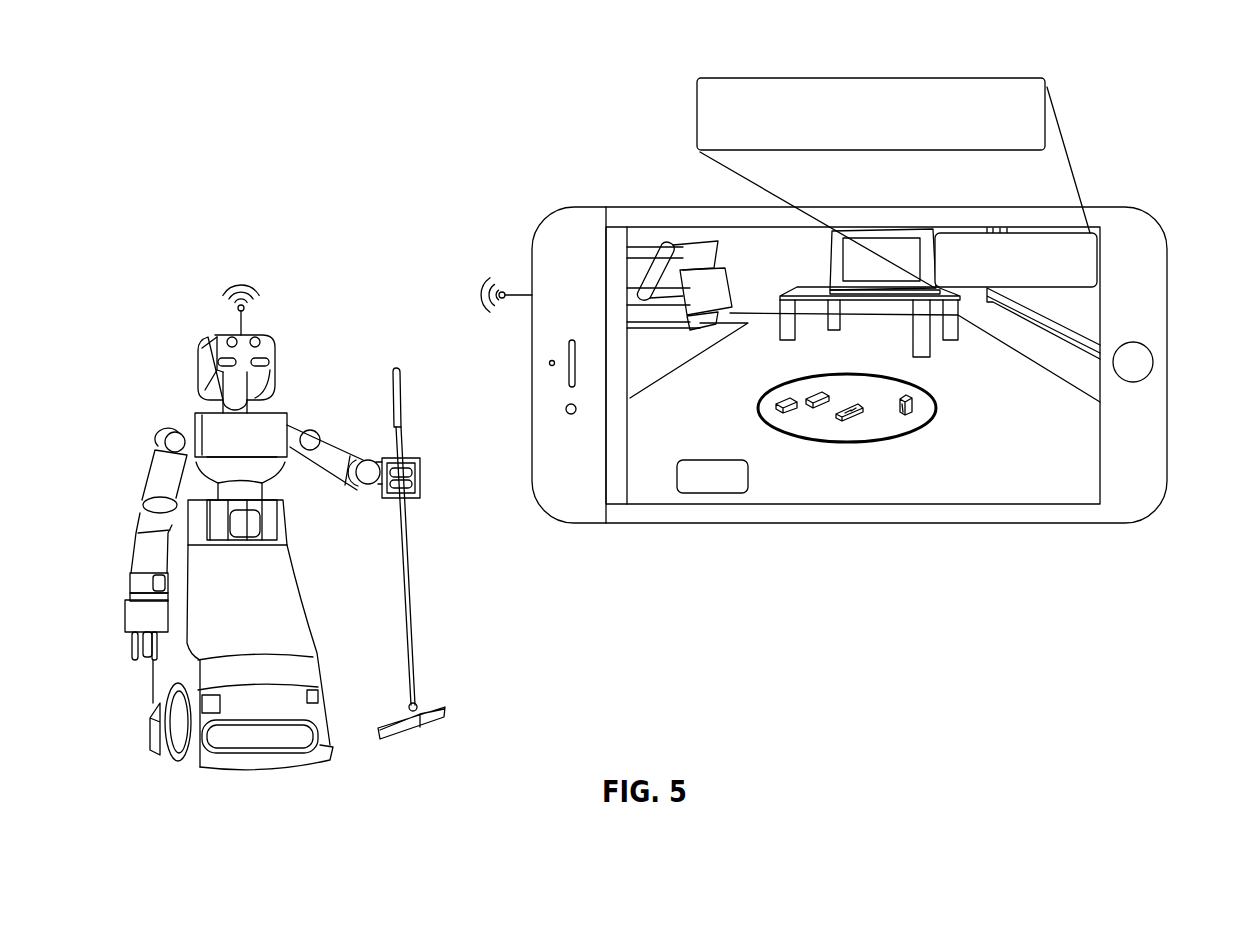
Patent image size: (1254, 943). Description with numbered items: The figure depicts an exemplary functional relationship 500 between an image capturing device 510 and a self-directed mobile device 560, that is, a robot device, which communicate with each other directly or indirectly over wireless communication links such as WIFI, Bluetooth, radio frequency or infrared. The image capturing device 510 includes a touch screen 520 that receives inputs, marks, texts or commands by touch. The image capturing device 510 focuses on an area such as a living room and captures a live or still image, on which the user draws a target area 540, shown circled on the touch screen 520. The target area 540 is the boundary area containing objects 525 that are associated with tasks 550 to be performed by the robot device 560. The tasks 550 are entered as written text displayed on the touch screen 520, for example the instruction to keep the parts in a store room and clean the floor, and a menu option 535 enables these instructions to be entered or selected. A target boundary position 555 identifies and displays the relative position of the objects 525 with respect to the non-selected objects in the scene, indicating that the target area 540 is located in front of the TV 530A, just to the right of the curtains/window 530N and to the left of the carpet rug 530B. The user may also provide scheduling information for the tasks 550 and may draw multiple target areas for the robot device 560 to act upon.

The functional relationship 500 is at (203, 108).
The image capturing device 510 is at (532, 265).
The touch screen 520 is at (947, 505).
The objects 525 is at (817, 407).
The non-selected object (TV) 530A is at (885, 273).
The non-selected object (carpet rug) 530B is at (684, 357).
The non-selected object (curtains/window) 530N is at (1027, 359).
The menu option 535 is at (748, 478).
The target area 540 is at (890, 438).
The tasks 550 is at (1075, 420).
The target boundary position 555 is at (1097, 257).
The self-directed mobile device 560 is at (198, 368).